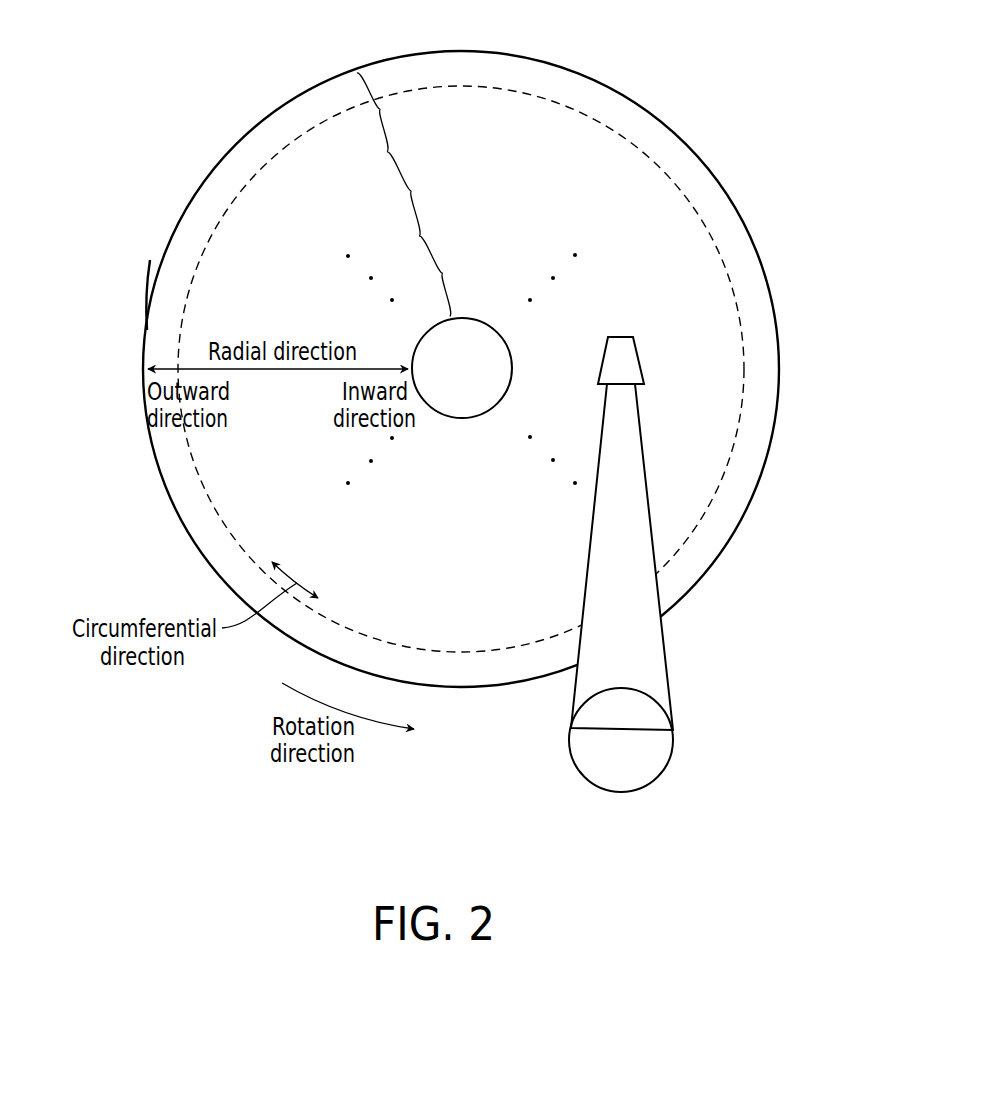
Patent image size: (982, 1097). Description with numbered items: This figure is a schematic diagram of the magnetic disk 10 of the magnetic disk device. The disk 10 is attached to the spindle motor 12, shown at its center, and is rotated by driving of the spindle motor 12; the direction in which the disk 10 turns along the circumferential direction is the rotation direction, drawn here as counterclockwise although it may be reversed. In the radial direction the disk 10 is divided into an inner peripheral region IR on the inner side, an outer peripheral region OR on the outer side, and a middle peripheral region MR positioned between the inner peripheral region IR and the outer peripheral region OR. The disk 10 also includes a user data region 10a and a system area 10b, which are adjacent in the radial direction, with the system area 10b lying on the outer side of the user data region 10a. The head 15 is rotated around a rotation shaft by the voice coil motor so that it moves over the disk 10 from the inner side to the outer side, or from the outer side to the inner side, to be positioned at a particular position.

The magnetic disk 10 is at (762, 264).
The user data region 10a is at (218, 249).
The system area 10b is at (155, 298).
The spindle motor 12 is at (447, 403).
The head 15 is at (641, 356).
The outer peripheral region OR is at (390, 111).
The middle peripheral region MR is at (421, 192).
The inner peripheral region IR is at (449, 275).